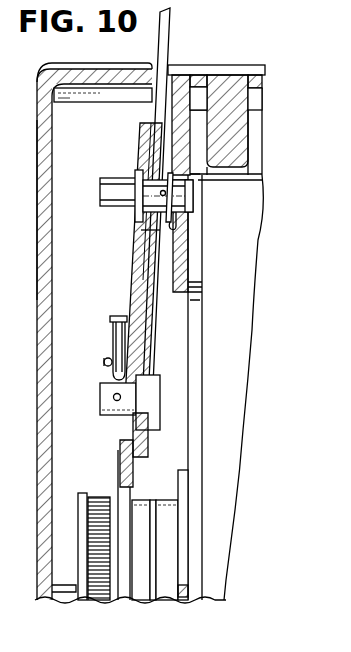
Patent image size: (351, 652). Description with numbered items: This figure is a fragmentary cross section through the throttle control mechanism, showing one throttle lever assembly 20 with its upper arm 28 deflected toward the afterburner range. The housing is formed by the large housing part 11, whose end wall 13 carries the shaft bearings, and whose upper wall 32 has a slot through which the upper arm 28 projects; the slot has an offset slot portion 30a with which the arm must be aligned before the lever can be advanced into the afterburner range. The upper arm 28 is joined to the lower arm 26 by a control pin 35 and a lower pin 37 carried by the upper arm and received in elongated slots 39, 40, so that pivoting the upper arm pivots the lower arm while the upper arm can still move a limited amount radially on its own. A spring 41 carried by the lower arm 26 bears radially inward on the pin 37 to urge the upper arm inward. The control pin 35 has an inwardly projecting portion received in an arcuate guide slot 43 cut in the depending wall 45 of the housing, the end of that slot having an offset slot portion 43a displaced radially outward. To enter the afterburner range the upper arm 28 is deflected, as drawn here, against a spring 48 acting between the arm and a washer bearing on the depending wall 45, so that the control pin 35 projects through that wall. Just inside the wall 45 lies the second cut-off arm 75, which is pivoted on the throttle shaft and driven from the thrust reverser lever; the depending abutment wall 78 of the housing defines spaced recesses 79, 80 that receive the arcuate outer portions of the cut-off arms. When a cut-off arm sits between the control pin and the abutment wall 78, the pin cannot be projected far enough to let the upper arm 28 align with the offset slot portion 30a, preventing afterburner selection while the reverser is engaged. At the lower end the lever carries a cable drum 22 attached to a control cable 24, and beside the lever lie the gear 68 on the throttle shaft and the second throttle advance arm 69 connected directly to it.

The large housing part 11 is at (42, 73).
The end wall 13 is at (42, 143).
The upper wall 32 is at (106, 65).
The offset slot portion 30a is at (157, 72).
The upper arm 28 is at (167, 31).
The abutment wall 78 is at (244, 153).
The recess 79 is at (199, 96).
The recess 80 is at (258, 104).
The offset slot portion 43a is at (262, 174).
The arcuate guide slot 43 is at (221, 207).
The depending wall 45 is at (182, 257).
The second cut-off arm 75 is at (198, 306).
The throttle lever assembly 20 is at (122, 294).
The elongated slot 39 is at (142, 240).
The control pin 35 is at (103, 185).
The spring 48 is at (192, 188).
The spring 41 is at (112, 336).
The pin 37 is at (104, 398).
The elongated slot 40 is at (132, 438).
The lower arm 26 is at (120, 472).
The second throttle advance arm 69 is at (81, 508).
The gear 68 is at (96, 548).
The control cable 24 is at (174, 478).
The cable drum 22 is at (168, 548).